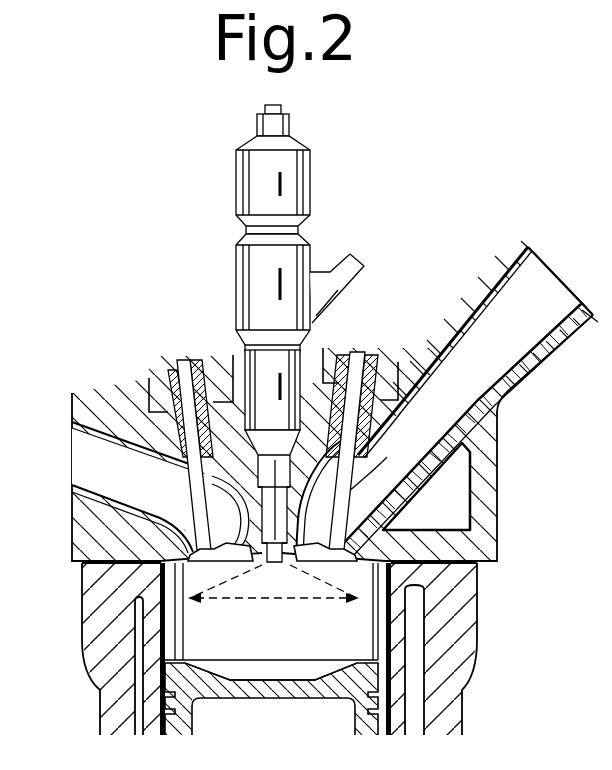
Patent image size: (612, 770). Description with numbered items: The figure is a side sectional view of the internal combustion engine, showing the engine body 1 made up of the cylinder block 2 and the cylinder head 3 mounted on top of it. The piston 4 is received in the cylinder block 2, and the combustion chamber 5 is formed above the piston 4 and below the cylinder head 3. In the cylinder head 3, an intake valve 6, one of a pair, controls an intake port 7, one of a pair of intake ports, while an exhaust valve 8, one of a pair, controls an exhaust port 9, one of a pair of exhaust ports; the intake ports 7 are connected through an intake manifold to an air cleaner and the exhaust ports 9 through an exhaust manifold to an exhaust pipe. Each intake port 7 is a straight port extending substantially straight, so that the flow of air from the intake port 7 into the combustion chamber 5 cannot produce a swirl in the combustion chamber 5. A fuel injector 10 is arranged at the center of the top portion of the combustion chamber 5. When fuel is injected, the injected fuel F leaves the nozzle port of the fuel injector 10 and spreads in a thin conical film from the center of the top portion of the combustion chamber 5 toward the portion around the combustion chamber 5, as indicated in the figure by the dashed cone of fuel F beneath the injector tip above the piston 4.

The engine body 1 is at (520, 514).
The cylinder block 2 is at (470, 633).
The cylinder head 3 is at (487, 477).
The piston 4 is at (322, 687).
The combustion chamber 5 is at (248, 647).
The intake valve 6 is at (351, 491).
The intake port 7 is at (463, 352).
The exhaust valve 8 is at (205, 508).
The exhaust port 9 is at (73, 456).
The fuel injector 10 is at (242, 290).
The injected fuel F is at (212, 586).